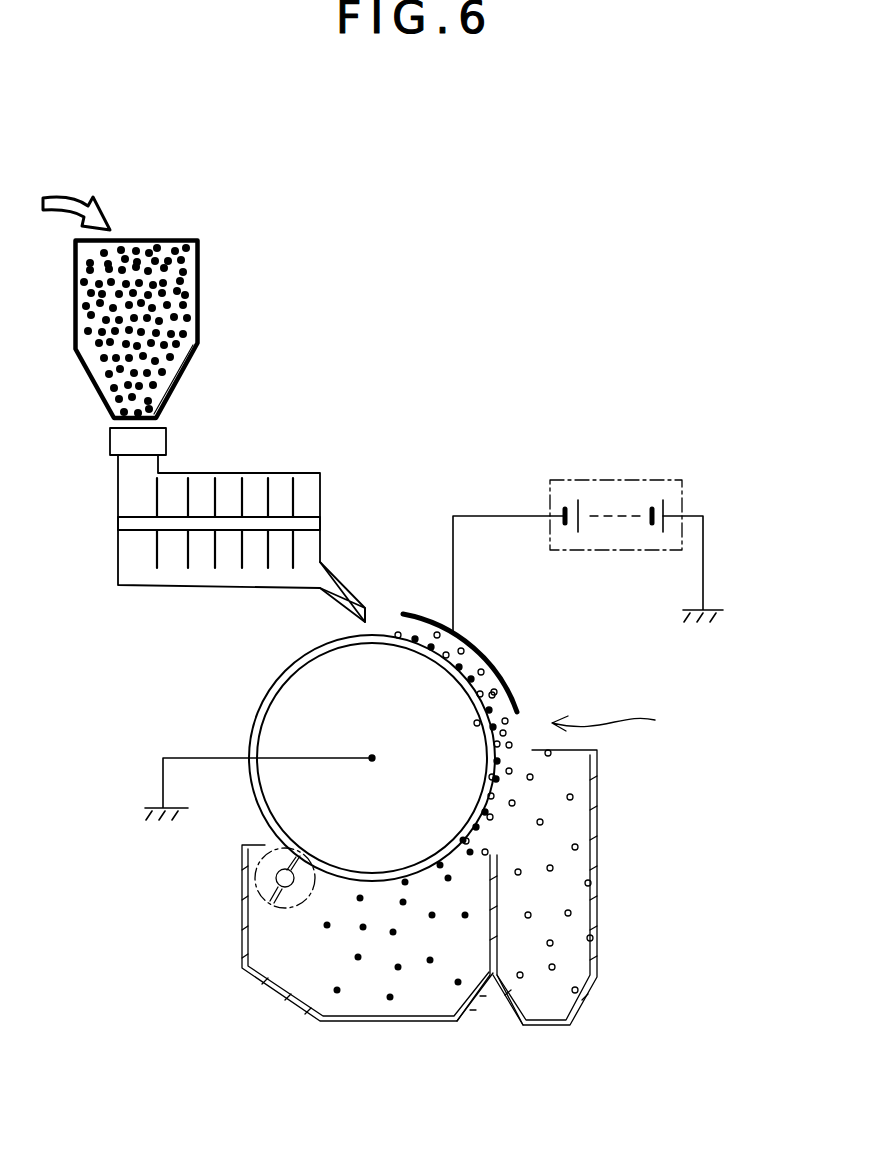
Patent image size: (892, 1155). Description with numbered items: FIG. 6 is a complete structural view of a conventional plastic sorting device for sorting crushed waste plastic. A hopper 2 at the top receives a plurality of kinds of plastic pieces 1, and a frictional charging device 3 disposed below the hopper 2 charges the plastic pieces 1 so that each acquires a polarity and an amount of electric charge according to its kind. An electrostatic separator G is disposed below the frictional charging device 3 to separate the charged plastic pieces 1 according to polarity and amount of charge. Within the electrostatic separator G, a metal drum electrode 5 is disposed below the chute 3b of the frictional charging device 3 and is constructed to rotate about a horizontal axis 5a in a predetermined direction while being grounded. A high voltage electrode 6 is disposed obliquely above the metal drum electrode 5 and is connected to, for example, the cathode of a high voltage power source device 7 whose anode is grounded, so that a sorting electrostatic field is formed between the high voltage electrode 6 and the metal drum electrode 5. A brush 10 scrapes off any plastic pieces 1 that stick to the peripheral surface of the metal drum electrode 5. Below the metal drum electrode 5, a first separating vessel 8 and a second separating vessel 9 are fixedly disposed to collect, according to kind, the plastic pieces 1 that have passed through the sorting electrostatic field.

The plastic pieces 1 is at (147, 240).
The hopper 2 is at (203, 268).
The frictional charging device 3 is at (268, 463).
The chute 3b is at (348, 597).
The metal drum electrode 5 is at (272, 682).
The horizontal axis 5a is at (372, 758).
The high voltage electrode 6 is at (515, 685).
The high voltage power source device 7 is at (593, 480).
The first separating vessel 8 is at (598, 905).
The second separating vessel 9 is at (275, 993).
The brush 10 is at (262, 892).
The electrostatic separator G is at (621, 716).